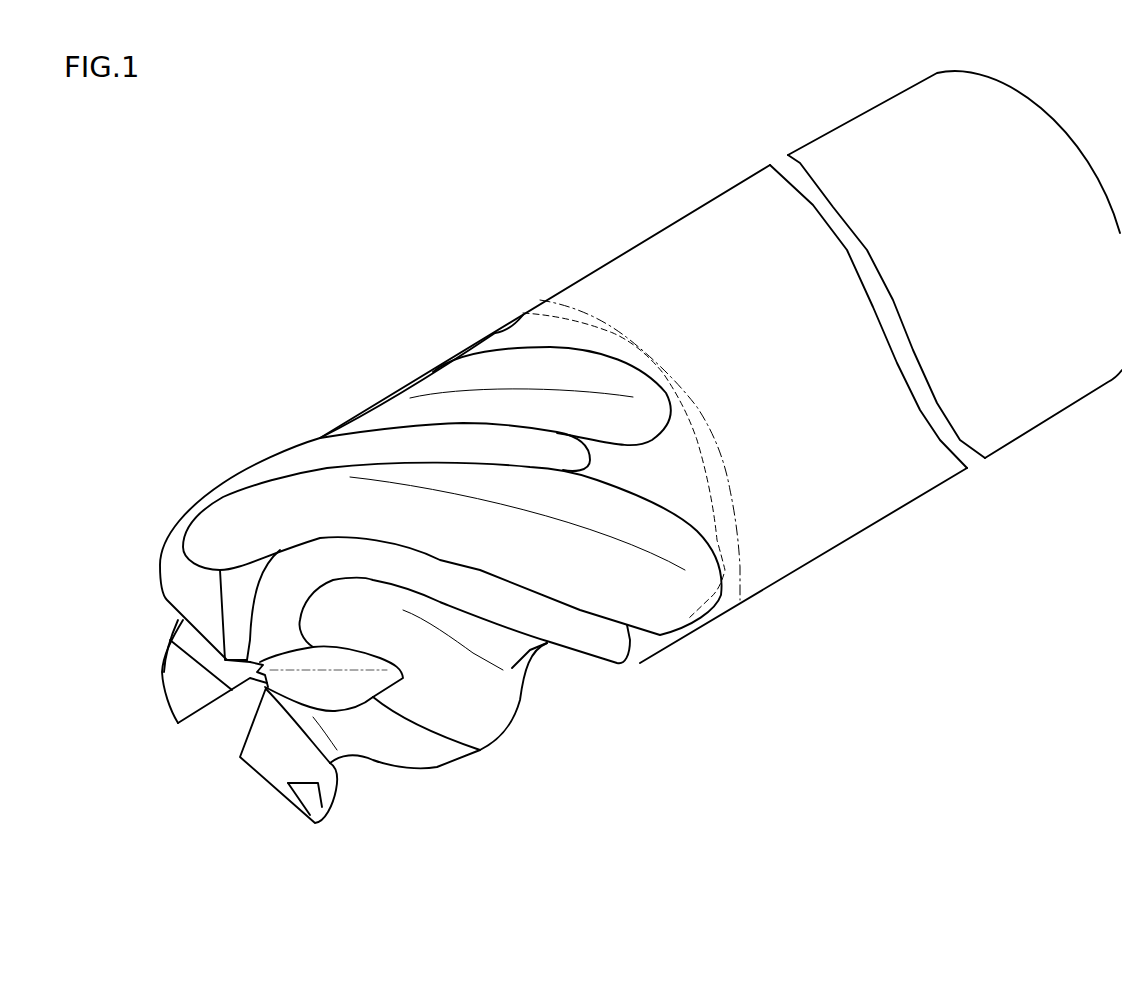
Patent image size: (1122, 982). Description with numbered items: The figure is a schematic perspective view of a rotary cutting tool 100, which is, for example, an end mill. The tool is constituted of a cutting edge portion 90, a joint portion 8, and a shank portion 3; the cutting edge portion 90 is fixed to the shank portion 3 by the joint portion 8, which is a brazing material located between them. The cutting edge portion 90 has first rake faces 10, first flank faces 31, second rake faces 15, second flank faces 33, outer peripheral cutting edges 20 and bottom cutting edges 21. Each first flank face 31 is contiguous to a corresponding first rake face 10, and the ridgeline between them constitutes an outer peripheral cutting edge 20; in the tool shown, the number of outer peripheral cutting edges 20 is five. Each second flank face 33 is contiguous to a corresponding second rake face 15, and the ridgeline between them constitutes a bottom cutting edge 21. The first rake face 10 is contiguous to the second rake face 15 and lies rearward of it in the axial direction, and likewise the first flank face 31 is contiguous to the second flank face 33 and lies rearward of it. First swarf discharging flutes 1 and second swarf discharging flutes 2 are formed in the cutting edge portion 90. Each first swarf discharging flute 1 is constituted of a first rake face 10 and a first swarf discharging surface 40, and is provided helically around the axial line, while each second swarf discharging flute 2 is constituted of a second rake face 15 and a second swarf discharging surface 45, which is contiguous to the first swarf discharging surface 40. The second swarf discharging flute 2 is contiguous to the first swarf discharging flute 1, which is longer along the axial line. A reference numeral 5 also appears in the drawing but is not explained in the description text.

The rotary cutting tool 100 is at (709, 127).
The shank portion 3 is at (680, 243).
The first swarf discharging flute 1 is at (507, 281).
The first rake face 10 is at (472, 560).
The first swarf discharging surface 40 is at (455, 473).
The first flank face 31 is at (417, 577).
The outer peripheral cutting edge 20 is at (387, 543).
The outer peripheral surface 5 is at (300, 472).
The second flank face 33 is at (273, 632).
The cutting edge portion 90 is at (567, 688).
The joint portion 8 is at (730, 567).
The second swarf discharging flute 2 is at (283, 849).
The second swarf discharging surface 45 is at (283, 690).
The second rake face 15 is at (291, 660).
The bottom cutting edge 21 is at (320, 692).